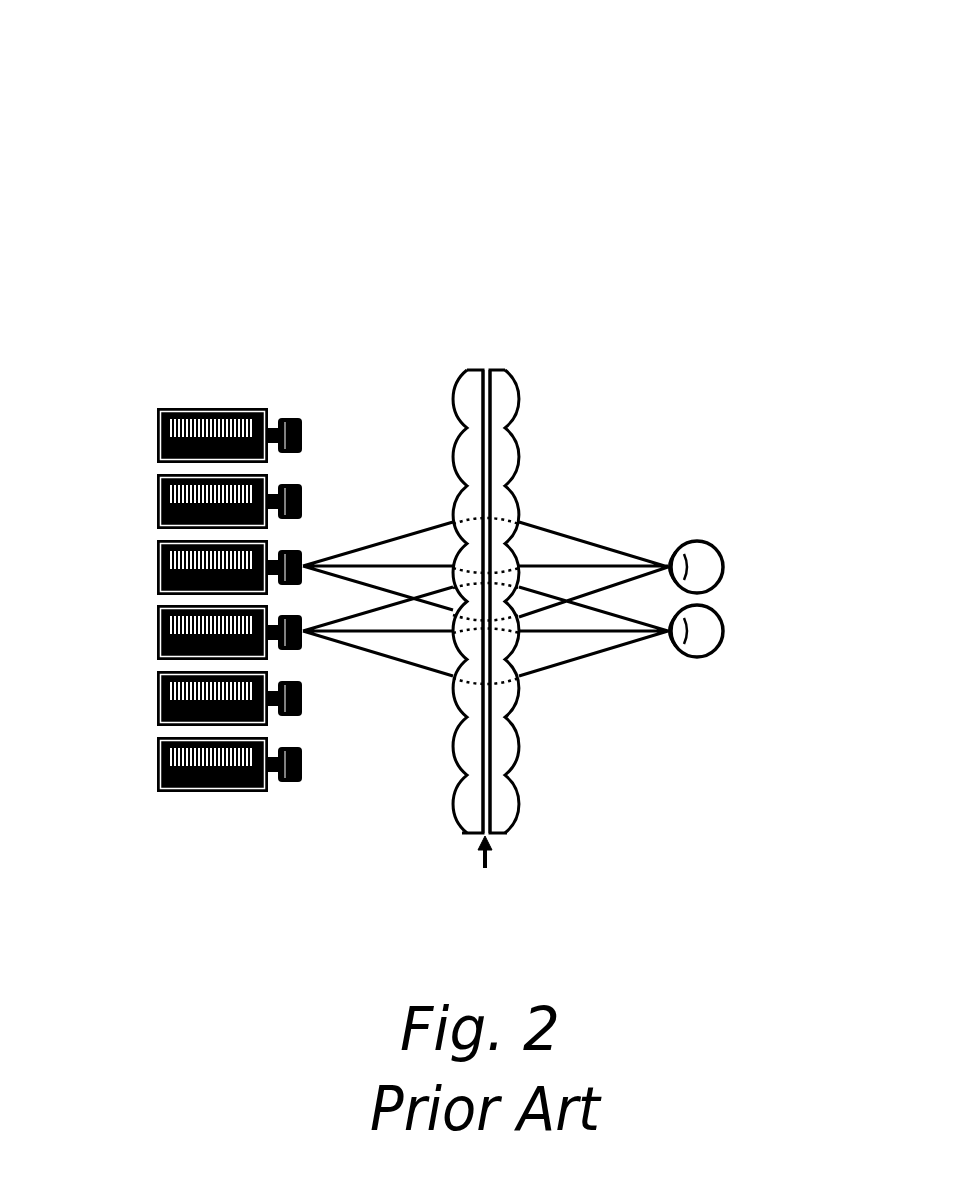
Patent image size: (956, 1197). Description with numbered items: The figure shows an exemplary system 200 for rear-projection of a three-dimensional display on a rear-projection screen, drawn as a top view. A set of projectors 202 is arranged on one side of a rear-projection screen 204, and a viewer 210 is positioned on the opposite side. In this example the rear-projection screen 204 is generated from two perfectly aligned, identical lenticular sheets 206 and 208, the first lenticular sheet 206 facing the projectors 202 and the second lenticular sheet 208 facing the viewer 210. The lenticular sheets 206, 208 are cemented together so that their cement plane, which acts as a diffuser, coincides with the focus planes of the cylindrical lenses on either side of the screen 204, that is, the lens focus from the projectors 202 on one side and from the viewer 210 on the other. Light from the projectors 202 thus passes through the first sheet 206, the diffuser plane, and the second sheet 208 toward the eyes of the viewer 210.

The prior art multi-projector display system 200 is at (495, 40).
The projectors 202 is at (157, 408).
The rear-projection screen 204 is at (485, 366).
The lenticular sheet 206 is at (453, 813).
The lenticular sheet 208 is at (518, 745).
The viewer 210 is at (740, 490).